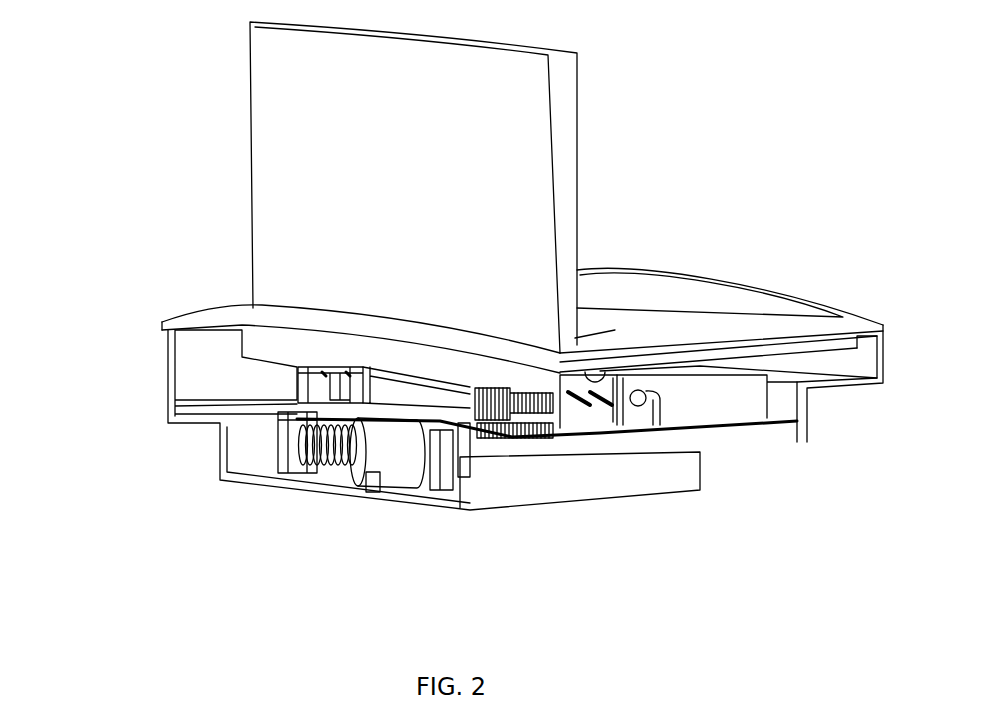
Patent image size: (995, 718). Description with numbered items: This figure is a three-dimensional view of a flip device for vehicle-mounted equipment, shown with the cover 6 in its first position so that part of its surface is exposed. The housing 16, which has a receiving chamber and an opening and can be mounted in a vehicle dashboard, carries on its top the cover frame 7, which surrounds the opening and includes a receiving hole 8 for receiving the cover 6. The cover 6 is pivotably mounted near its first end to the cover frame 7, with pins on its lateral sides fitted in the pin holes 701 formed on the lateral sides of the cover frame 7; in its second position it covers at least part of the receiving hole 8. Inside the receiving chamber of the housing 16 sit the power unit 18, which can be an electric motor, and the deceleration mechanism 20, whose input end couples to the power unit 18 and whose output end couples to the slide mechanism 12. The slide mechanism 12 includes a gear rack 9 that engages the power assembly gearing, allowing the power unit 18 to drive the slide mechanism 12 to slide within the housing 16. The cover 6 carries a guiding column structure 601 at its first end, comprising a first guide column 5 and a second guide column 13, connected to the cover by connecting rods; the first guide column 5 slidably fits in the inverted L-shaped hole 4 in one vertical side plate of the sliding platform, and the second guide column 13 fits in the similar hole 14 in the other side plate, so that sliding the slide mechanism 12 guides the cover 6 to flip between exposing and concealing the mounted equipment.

The hole 4 is at (297, 423).
The first guide column 5 is at (297, 398).
The cover 6 is at (368, 198).
The cover frame 7 is at (287, 312).
The receiving hole 8 is at (607, 325).
The gear rack 9 is at (500, 383).
The slide mechanism 12 is at (707, 405).
The second guide column 13 is at (640, 398).
The hole 14 is at (645, 390).
The housing 16 is at (212, 378).
The power unit 18 is at (388, 453).
The deceleration mechanism 20 is at (332, 465).
The guiding column structure 601 is at (605, 404).
The pin holes 701 is at (603, 372).